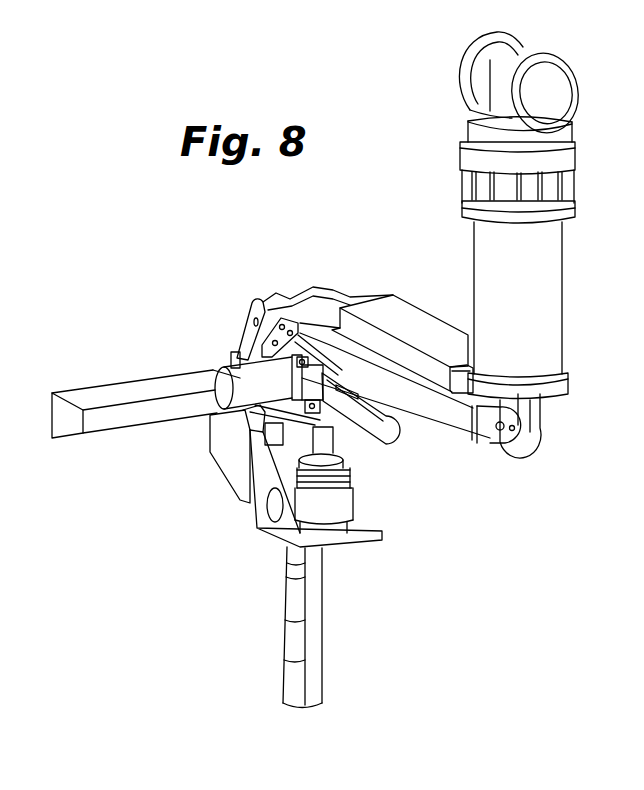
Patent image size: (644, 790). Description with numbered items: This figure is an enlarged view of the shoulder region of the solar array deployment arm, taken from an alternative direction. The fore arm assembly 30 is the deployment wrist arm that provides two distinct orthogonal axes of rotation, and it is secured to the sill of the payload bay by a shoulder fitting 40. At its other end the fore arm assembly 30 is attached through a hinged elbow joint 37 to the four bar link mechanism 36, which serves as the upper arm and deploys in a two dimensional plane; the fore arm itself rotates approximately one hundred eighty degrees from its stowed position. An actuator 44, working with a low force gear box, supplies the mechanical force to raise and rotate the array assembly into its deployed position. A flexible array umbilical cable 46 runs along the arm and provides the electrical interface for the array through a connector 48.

The fore arm assembly 30 is at (478, 113).
The four bar link mechanism 36 is at (408, 316).
The elbow joint 37 is at (487, 442).
The shoulder fitting 40 is at (262, 308).
The actuator 44 is at (227, 393).
The flexible array umbilical cable 46 is at (400, 445).
The connector 48 is at (333, 517).